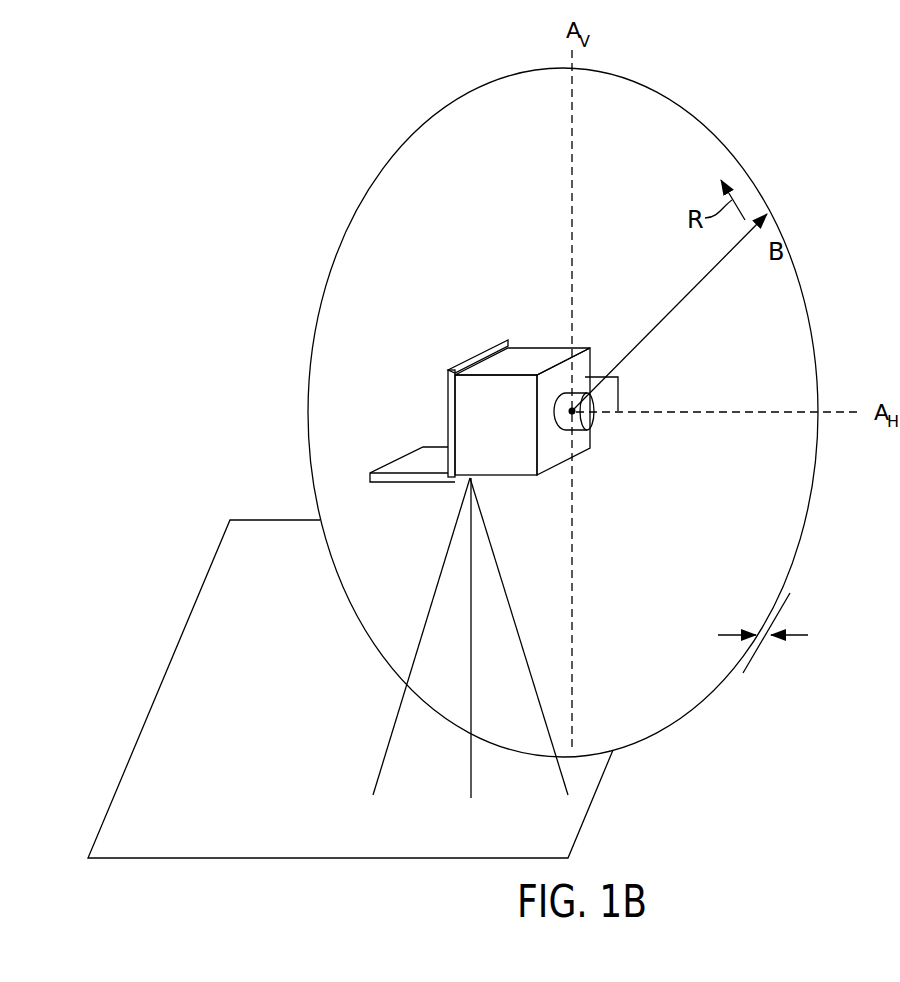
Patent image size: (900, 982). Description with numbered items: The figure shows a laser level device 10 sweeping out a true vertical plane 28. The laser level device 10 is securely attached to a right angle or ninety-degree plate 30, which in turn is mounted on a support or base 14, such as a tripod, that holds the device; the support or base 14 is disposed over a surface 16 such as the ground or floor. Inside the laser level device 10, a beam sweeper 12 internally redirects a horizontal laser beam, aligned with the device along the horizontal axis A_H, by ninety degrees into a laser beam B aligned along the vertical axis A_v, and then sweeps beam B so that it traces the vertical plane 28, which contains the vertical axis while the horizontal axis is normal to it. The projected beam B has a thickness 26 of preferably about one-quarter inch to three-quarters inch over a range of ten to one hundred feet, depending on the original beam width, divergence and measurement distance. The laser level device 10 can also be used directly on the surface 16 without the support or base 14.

The laser level device 10 is at (530, 356).
The beam sweeper 12 is at (591, 432).
The support or base 14 is at (433, 594).
The surface 16 is at (575, 810).
The thickness 26 is at (757, 638).
The vertical plane 28 is at (810, 300).
The ninety-degree plate 30 is at (460, 363).